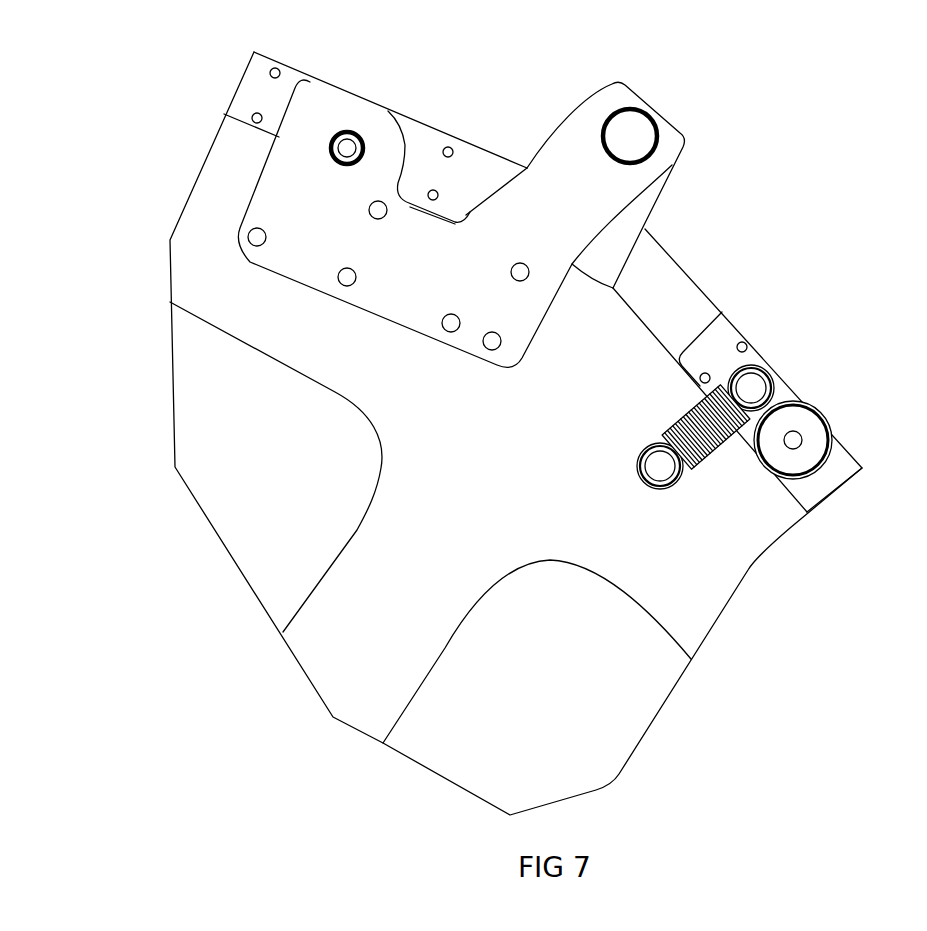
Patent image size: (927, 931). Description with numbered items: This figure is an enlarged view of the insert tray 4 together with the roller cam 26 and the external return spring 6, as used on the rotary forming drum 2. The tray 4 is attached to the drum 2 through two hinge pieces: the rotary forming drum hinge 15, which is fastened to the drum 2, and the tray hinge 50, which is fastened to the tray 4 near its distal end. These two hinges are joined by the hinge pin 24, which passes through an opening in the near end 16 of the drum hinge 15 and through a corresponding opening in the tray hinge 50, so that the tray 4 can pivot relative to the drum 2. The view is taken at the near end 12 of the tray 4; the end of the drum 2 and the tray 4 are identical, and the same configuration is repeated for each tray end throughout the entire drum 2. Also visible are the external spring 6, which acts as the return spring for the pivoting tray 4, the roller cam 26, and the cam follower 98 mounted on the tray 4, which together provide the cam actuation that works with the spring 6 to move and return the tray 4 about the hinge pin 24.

The rotary forming drum 2 is at (112, 178).
The insert tray 4 is at (467, 154).
The external return spring 6 is at (703, 441).
The near end 12 is at (422, 146).
The rotary forming drum hinge 15 is at (278, 177).
The near end of drum hinge 16 is at (587, 187).
The hinge pin 24 is at (634, 126).
The roller cam 26 is at (797, 417).
The tray hinge 50 is at (488, 168).
The cam follower 98 is at (355, 131).